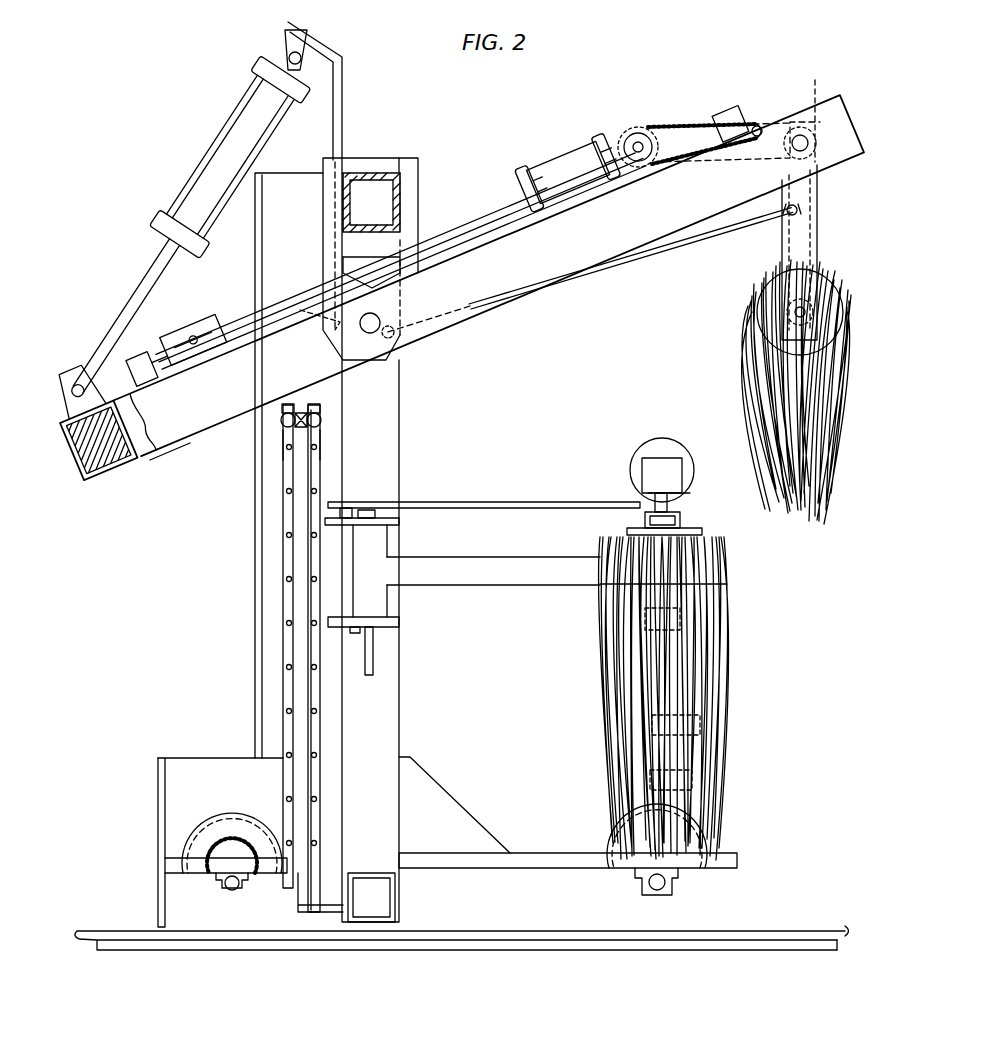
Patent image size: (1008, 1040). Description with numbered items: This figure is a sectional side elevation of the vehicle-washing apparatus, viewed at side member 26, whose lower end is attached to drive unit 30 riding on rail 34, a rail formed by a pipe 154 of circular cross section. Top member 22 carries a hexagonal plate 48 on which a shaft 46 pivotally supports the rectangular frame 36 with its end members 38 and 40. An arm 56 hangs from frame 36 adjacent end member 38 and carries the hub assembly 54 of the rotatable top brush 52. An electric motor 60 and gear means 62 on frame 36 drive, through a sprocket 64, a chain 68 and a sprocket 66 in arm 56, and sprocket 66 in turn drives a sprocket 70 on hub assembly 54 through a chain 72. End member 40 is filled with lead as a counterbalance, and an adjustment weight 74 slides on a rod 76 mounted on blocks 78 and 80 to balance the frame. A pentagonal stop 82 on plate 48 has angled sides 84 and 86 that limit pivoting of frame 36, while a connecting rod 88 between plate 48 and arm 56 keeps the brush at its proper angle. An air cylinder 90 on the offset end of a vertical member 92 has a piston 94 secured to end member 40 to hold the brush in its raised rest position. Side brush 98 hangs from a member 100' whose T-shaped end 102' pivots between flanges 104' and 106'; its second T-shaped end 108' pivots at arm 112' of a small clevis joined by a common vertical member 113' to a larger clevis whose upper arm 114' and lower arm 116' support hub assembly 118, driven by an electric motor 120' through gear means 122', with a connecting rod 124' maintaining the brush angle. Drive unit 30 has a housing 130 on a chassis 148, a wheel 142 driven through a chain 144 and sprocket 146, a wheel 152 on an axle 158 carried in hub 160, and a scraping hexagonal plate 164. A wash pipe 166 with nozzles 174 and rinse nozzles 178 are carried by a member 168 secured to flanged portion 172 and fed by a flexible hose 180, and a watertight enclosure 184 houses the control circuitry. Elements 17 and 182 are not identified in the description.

The pulley 17 is at (320, 426).
The top member 22 is at (376, 173).
The side member 26 is at (401, 425).
The drive unit 30 is at (178, 755).
The rail 34 is at (132, 950).
The rectangular frame 36 is at (186, 448).
The end member 38 is at (848, 110).
The end member 40 is at (84, 444).
The shaft 46 is at (372, 336).
The hexagonal plate 48 is at (440, 182).
The top brush 52 is at (856, 393).
The hub assembly 54 is at (836, 330).
The arm 56 is at (820, 185).
The electric motor 60 is at (570, 156).
The gear means 62 is at (640, 125).
The sprocket 64 is at (628, 126).
The sprocket 66 is at (741, 111).
The chain 68 is at (680, 124).
The sprocket 70 is at (806, 312).
The chain 72 is at (787, 250).
The adjustment weight 74 is at (204, 324).
The rod 76 is at (498, 218).
The block 78 is at (137, 358).
The block 80 is at (740, 108).
The pentagonal stop 82 is at (343, 262).
The angled side 84 is at (343, 280).
The angled side 86 is at (405, 285).
The connecting rod 88 is at (614, 266).
The air cylinder 90 is at (228, 136).
The member 92 is at (345, 78).
The piston 94 is at (130, 300).
The side brush 98 is at (728, 650).
The member 100' is at (493, 588).
The T-shaped end 102' is at (409, 574).
The flange 104' is at (396, 534).
The flange 106' is at (393, 646).
The second T-shaped end 108' is at (694, 580).
The horizontal arm 112' is at (598, 631).
The common vertical member 113' is at (726, 720).
The horizontal upper arm 114' is at (694, 515).
The horizontal lower arm 116' is at (720, 789).
The hub assembly 118 is at (700, 534).
The electric motor 120' is at (651, 459).
The gear means 122' is at (628, 475).
The connecting rod 124' is at (484, 494).
The housing 130 is at (428, 777).
The wheel 142 is at (278, 903).
The chain 144 is at (262, 905).
The sprocket 146 is at (226, 910).
The chassis 148 is at (740, 860).
The wheel 152 is at (700, 907).
The pipe 154 is at (832, 926).
The axle 158 is at (668, 882).
The hub 160 is at (640, 880).
The hexagonal plate 164 is at (158, 905).
The wash pipe 166 is at (288, 440).
The inverted U-shaped member 168 is at (320, 720).
The flanged portion 172 is at (400, 905).
The nozzles 174 is at (288, 663).
The nozzles 178 is at (318, 442).
The flexible hose 180 is at (283, 420).
The cross block 182 is at (318, 414).
The water tight enclosure 184 is at (255, 585).